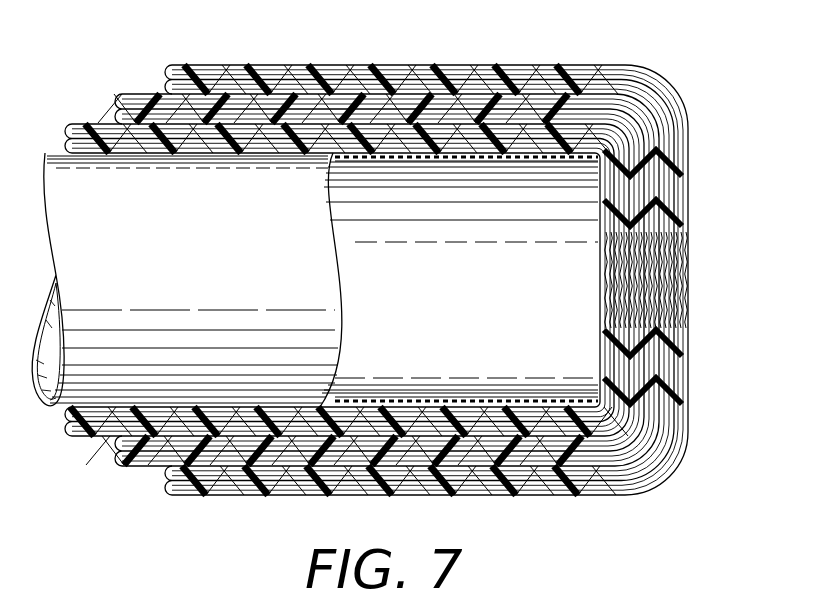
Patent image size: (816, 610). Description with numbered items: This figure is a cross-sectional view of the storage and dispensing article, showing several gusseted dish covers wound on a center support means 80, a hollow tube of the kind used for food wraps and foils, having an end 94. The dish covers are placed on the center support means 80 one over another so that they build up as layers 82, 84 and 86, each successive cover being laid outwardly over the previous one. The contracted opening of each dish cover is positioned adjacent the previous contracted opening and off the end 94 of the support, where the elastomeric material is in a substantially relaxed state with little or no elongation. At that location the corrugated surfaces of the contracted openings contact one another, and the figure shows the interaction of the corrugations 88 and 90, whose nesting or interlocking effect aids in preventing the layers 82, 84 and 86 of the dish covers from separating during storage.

The center support means 80 is at (173, 272).
The layer of dish cover 82 is at (83, 124).
The layer of dish cover 84 is at (131, 94).
The layer of dish cover 86 is at (182, 65).
The corrugation 88 is at (657, 253).
The corrugation 90 is at (684, 305).
The end of center support means 94 is at (600, 162).